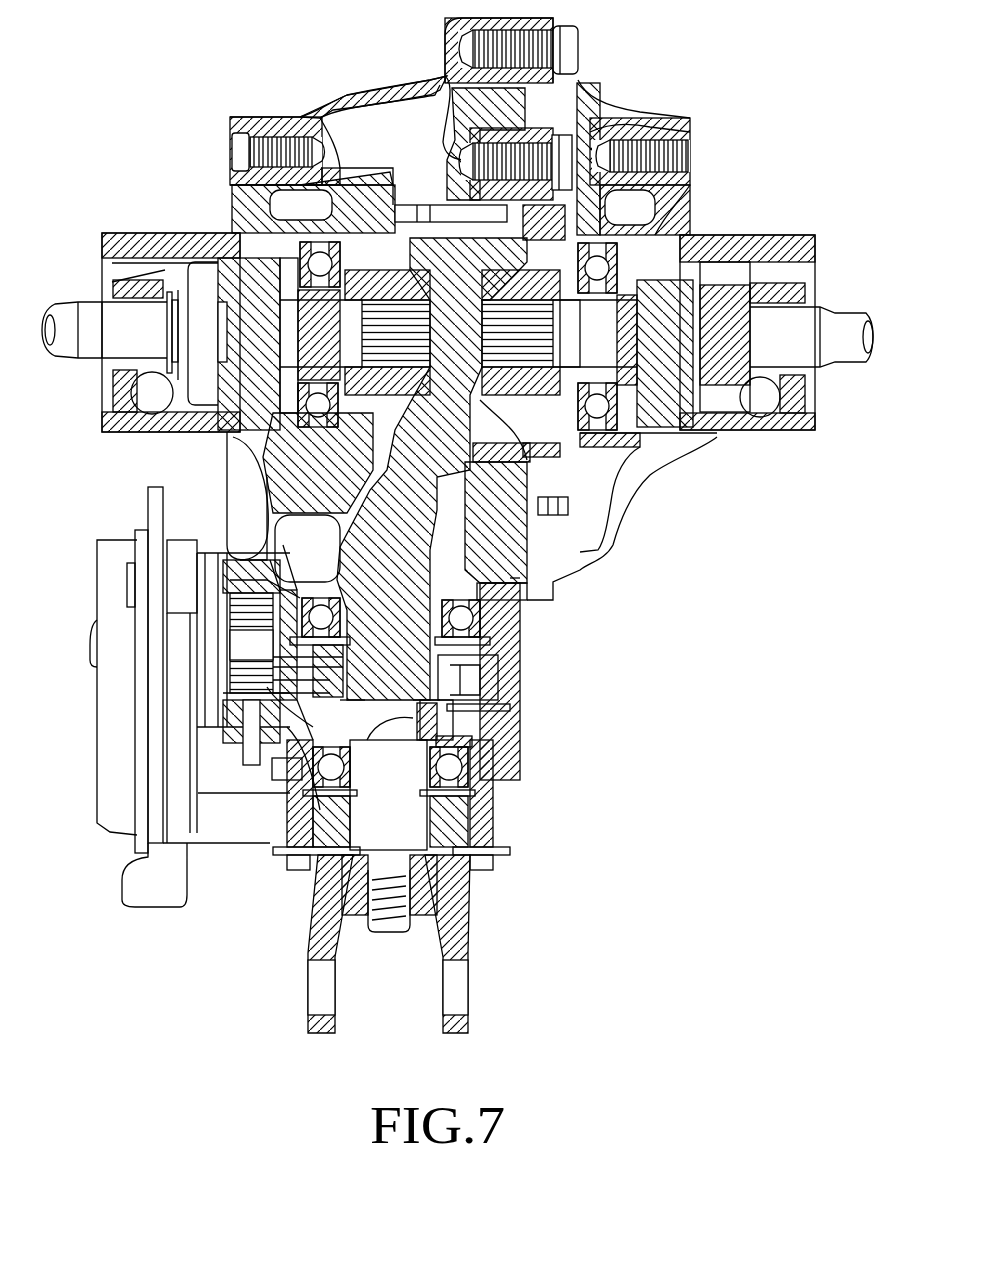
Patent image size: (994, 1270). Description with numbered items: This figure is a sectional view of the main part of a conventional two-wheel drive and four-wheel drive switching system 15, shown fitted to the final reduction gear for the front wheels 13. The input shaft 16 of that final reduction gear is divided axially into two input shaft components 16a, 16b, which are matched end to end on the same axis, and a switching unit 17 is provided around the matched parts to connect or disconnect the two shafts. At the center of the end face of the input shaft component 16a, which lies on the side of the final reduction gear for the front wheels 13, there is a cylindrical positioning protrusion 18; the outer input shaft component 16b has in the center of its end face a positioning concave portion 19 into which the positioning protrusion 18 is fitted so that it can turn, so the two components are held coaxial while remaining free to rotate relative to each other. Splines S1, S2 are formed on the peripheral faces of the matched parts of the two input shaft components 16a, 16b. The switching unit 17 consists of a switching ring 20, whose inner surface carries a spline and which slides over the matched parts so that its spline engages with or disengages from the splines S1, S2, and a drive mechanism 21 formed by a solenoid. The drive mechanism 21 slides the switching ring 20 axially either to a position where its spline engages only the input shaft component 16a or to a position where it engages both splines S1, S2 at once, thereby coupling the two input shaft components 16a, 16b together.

The final reduction gear for the front wheels 13 is at (618, 513).
The two-wheel drive and four-wheel drive switching system 15 is at (500, 806).
The input shaft 16 is at (492, 805).
The input shaft component 16a is at (413, 630).
The input shaft component 16b is at (470, 920).
The switching unit 17 is at (472, 684).
The positioning protrusion 18 is at (440, 790).
The positioning concave portion 19 is at (347, 707).
The switching ring 20 is at (455, 716).
The drive mechanism 21 is at (232, 585).
The spline S1 is at (455, 744).
The spline S2 is at (282, 768).